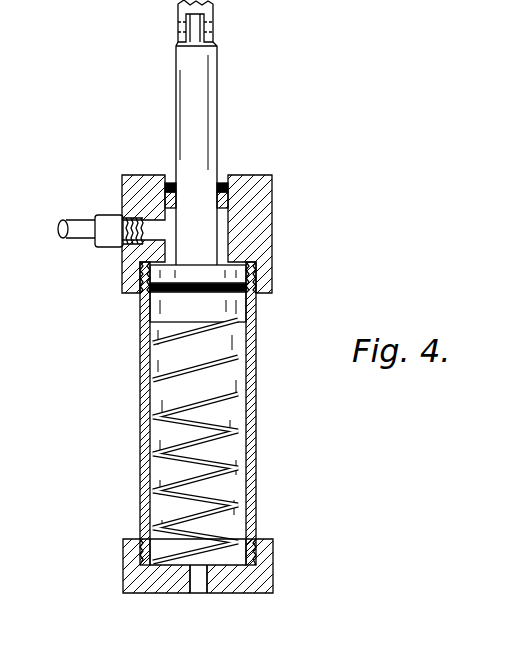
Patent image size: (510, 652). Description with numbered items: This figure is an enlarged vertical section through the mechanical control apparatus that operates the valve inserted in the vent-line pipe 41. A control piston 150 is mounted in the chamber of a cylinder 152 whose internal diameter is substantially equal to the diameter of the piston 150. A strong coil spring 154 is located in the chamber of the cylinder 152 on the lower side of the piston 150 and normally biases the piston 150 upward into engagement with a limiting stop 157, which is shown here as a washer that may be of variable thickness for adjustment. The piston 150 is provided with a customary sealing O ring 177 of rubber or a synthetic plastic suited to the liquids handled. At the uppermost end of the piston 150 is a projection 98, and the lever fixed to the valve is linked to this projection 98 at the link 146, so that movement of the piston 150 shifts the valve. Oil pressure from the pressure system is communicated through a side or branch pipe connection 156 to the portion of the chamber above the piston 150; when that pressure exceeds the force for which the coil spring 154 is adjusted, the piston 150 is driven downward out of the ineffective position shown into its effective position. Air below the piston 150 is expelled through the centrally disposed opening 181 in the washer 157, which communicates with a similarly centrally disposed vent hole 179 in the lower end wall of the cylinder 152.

The vent-line pipe 41 is at (1, 628).
The link 146 is at (177, 12).
The projection 98 is at (216, 106).
The side or branch pipe connection 156 is at (72, 222).
The limiting stop 157 is at (244, 268).
The sealing O ring 177 is at (273, 275).
The control piston 150 is at (140, 308).
The cylinder 152 is at (140, 398).
The coil spring 154 is at (140, 485).
The centrally disposed opening 181 is at (252, 540).
The vent hole 179 is at (199, 595).